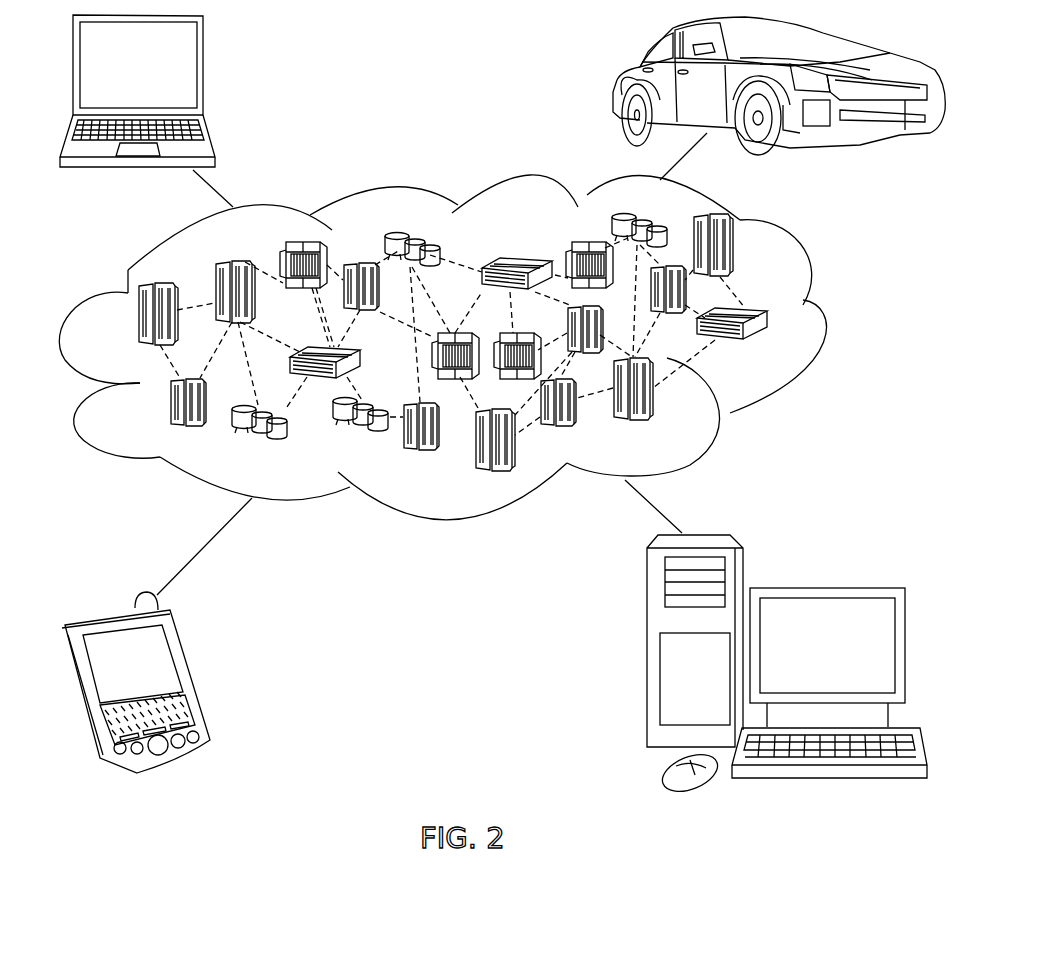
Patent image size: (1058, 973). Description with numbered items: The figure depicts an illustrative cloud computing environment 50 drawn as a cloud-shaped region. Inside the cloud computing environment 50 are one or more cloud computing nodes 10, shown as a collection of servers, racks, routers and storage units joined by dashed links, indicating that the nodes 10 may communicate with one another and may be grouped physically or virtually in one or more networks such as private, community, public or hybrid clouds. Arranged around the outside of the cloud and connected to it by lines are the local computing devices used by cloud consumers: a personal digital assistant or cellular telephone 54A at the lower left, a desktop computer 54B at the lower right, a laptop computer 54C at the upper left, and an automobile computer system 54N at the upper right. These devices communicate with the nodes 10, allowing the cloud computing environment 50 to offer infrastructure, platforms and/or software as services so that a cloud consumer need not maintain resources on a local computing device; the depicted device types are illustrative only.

The cloud computing node 10 is at (772, 352).
The cloud computing environment 50 is at (828, 323).
The personal digital assistant or cellular telephone 54A is at (196, 675).
The desktop computer 54B is at (824, 588).
The laptop computer 54C is at (203, 72).
The automobile computer system 54N is at (617, 88).